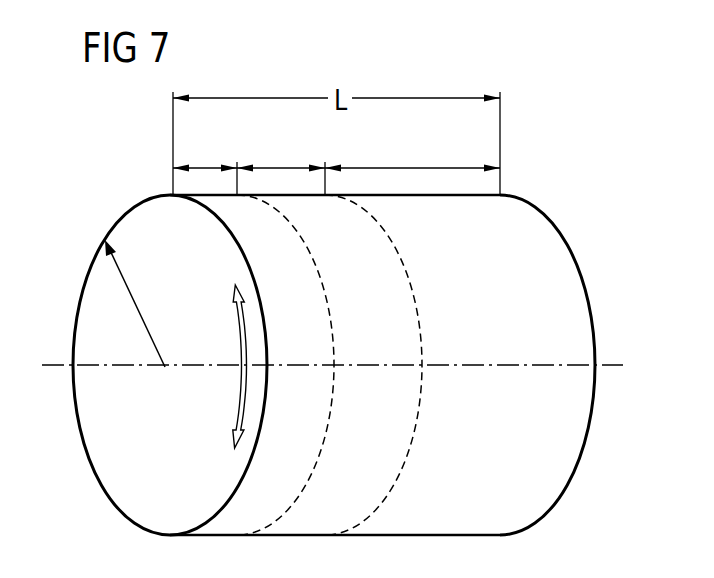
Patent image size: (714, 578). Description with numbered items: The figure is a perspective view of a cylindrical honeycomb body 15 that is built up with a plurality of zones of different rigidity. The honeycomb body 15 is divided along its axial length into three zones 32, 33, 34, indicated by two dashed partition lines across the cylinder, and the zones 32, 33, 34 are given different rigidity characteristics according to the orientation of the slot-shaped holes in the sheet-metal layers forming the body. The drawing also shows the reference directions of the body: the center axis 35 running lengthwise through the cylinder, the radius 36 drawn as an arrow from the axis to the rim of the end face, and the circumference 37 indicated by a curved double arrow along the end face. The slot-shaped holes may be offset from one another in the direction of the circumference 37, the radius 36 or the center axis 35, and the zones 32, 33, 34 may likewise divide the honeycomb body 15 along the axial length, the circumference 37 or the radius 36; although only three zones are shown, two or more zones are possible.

The honeycomb body 15 is at (558, 262).
The zone 32 is at (207, 168).
The zone 33 is at (283, 168).
The zone 34 is at (415, 168).
The center axis 35 is at (611, 362).
The radius 36 is at (133, 292).
The circumference 37 is at (238, 387).